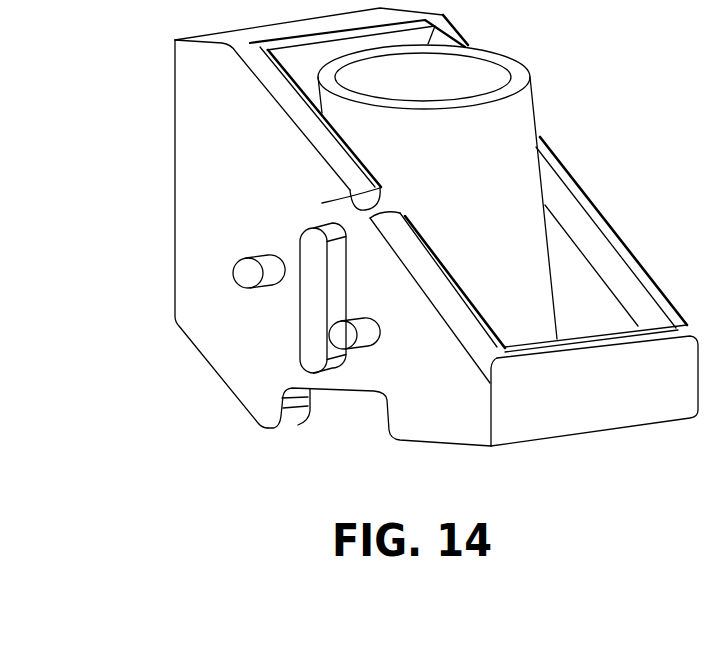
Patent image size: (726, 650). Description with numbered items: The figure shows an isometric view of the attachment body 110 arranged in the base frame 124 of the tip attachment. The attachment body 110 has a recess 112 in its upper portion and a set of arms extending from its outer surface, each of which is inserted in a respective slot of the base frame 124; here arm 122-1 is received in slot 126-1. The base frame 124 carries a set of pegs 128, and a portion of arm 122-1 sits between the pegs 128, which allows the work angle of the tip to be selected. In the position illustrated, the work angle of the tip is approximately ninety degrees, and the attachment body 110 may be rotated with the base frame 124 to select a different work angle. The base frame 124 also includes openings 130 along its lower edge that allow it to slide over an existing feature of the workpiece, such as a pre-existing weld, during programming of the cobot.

The attachment body 110 is at (485, 205).
The recess 112 is at (445, 90).
The base frame 124 is at (247, 131).
The slot 126-1 is at (373, 193).
The arm 122-1 is at (315, 240).
The pegs 128 is at (343, 335).
The openings 130 is at (358, 423).